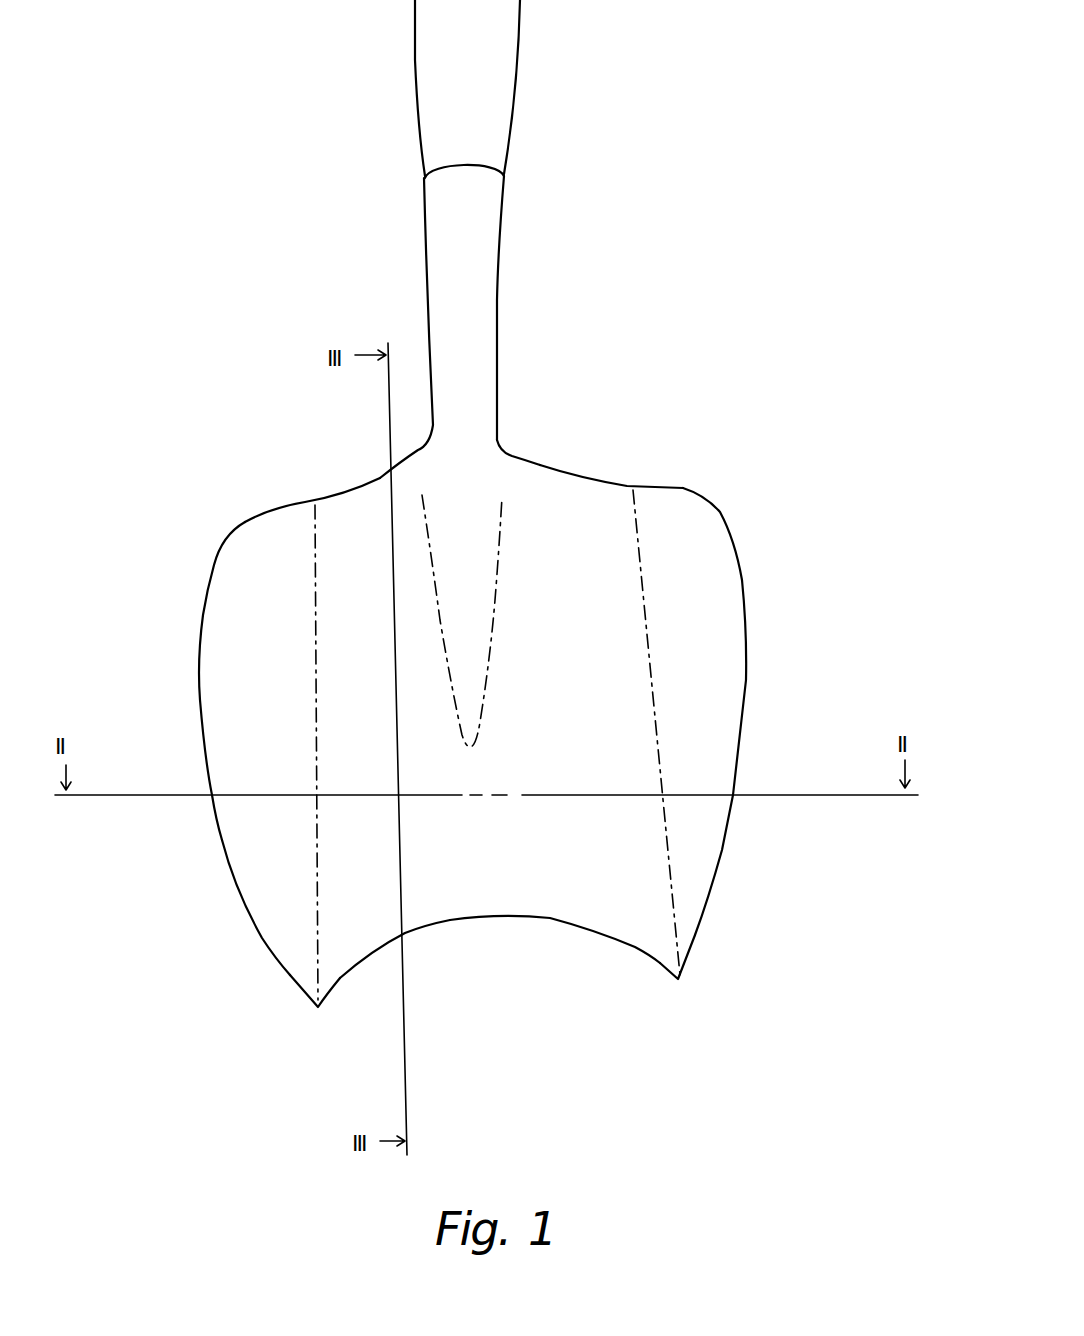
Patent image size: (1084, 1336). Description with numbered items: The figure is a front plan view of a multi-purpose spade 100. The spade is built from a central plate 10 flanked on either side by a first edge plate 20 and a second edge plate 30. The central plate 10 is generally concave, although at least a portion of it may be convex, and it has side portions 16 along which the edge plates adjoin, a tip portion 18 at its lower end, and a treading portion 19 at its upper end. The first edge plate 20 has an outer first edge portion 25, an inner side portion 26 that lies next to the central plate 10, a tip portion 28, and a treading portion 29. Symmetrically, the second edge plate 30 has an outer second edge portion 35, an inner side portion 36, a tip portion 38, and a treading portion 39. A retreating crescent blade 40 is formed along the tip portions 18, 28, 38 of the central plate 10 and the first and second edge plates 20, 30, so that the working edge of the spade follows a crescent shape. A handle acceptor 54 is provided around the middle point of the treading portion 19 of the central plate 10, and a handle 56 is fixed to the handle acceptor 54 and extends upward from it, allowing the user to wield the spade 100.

The multi-purpose spade 100 is at (734, 98).
The central plate 10 is at (573, 514).
The side portions 16 is at (325, 575).
The tip portion 18 is at (590, 930).
The treading portion 19 is at (515, 453).
The first edge plate 20 is at (237, 570).
The first edge portion 25 is at (197, 700).
The inner side portion 26 is at (312, 928).
The tip portion 28 is at (300, 985).
The treading portion 29 is at (280, 498).
The second edge plate 30 is at (709, 527).
The second edge portion 35 is at (747, 680).
The inner side portion 36 is at (678, 887).
The tip portion 38 is at (697, 943).
The treading portion 39 is at (684, 488).
The retreating crescent blade 40 is at (384, 957).
The handle acceptor 54 is at (493, 210).
The handle 56 is at (510, 45).